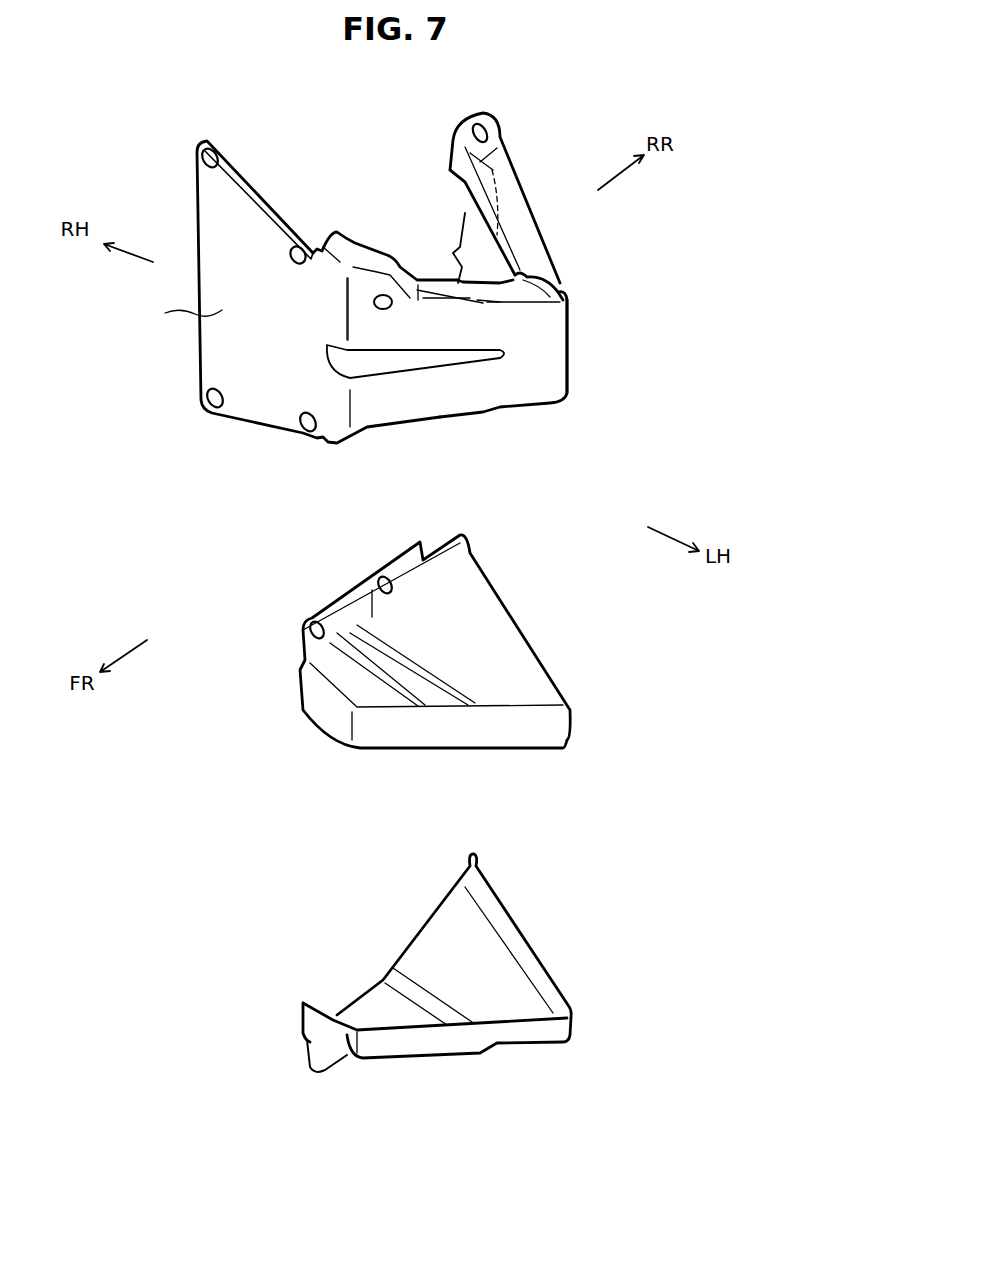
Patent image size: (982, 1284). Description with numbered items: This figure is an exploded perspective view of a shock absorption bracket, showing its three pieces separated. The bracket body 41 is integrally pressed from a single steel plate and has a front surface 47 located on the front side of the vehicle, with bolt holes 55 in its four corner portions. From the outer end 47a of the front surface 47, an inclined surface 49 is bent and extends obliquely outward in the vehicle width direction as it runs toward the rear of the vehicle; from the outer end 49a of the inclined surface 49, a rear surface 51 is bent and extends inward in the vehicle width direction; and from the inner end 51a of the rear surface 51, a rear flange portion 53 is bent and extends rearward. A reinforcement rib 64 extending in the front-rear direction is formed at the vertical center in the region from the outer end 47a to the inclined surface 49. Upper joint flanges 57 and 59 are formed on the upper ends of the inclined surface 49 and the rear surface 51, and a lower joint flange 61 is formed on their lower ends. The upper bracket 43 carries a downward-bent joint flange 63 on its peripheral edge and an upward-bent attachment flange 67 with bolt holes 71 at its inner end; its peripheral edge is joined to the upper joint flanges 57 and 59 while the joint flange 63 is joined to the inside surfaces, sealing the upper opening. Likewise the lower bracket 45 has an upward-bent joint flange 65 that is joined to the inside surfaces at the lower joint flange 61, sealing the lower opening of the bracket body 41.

The bracket body 41 is at (396, 282).
The upper bracket 43 is at (434, 663).
The lower bracket 45 is at (452, 988).
The front surface 47 is at (288, 292).
The outer end of the front surface 47a is at (347, 300).
The inclined surface 49 is at (440, 387).
The outer end of the inclined surface 49a is at (572, 340).
The rear surface 51 is at (517, 222).
The inner end of the rear surface 51a is at (463, 230).
The rear flange portion 53 is at (497, 140).
The bolt holes 55 is at (215, 148).
The upper joint flange 57 is at (353, 248).
The upper joint flange 59 is at (527, 260).
The lower joint flange 61 is at (440, 257).
The joint flange 63 is at (443, 728).
The reinforcement rib 64 is at (362, 426).
The joint flange 65 is at (430, 1043).
The attachment flange 67 is at (343, 612).
The bolt holes 71 is at (305, 620).